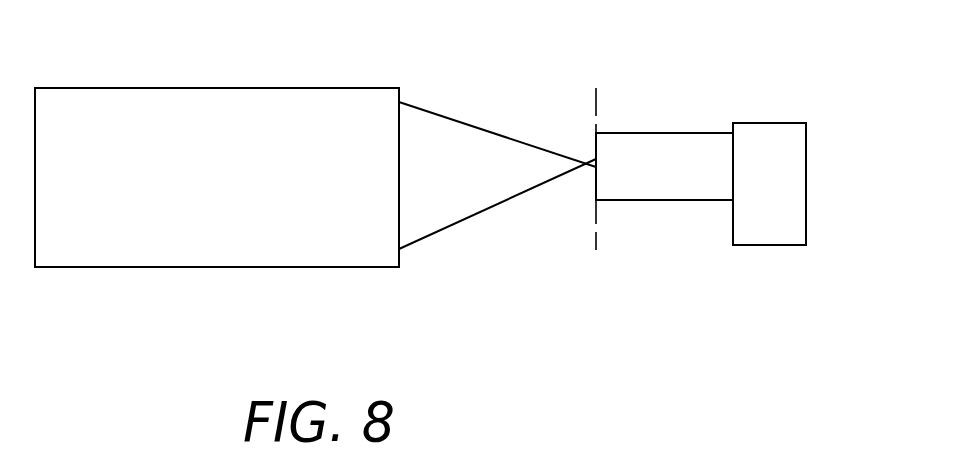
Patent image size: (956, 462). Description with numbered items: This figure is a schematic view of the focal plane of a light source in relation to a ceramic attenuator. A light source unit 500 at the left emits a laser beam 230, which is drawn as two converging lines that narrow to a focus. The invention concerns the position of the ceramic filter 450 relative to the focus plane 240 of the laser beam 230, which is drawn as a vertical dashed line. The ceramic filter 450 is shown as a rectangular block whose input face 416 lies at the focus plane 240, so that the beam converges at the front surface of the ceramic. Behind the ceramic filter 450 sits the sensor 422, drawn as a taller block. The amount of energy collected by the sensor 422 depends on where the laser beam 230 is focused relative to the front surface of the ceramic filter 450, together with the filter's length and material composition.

The light source / projector unit 500 is at (256, 88).
The laser beam 230 is at (463, 118).
The input face 416 is at (590, 168).
The focus plane 240 is at (596, 232).
The ceramic filter 450 is at (673, 133).
The sensor 422 is at (785, 123).